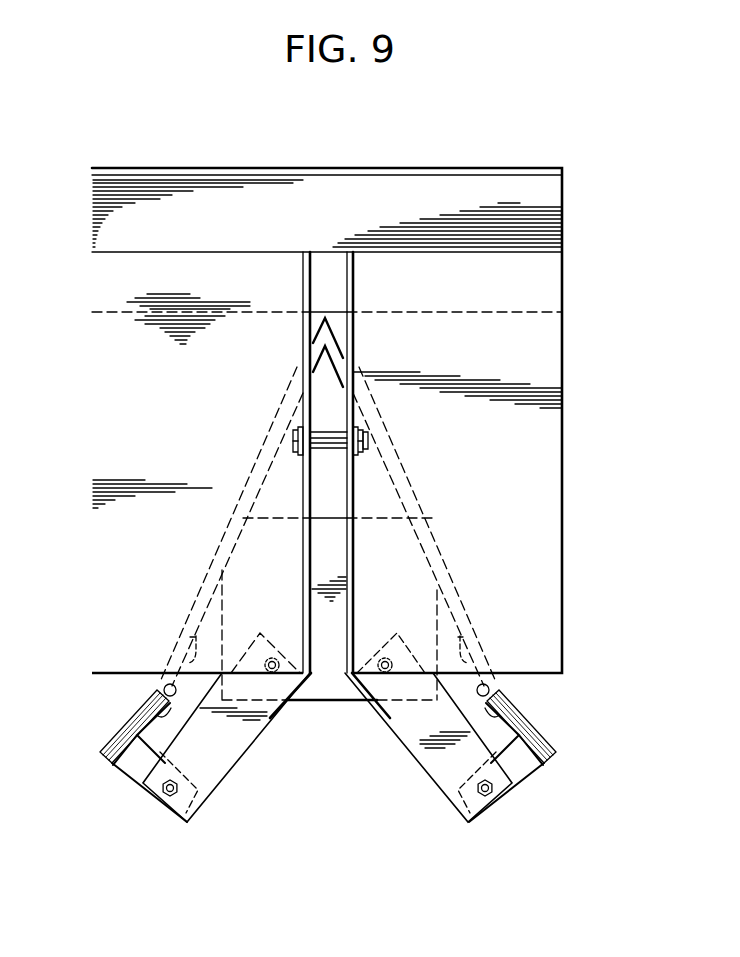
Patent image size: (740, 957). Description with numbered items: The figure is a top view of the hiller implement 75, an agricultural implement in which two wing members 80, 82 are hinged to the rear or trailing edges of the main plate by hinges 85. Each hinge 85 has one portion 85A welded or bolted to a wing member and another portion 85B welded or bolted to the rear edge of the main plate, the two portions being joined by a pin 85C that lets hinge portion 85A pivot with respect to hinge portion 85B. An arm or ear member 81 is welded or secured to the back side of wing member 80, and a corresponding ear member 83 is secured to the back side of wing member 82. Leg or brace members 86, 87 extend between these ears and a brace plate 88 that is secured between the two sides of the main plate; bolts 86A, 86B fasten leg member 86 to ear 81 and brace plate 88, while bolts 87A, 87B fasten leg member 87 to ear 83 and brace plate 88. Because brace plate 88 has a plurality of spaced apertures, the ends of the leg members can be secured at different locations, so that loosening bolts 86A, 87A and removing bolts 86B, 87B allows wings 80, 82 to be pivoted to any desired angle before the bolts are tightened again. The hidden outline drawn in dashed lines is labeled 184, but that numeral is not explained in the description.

The hiller implement 75 is at (531, 134).
The mounting bracket (hidden outline) 184 is at (425, 527).
The brace plate 88 is at (333, 693).
The leg member 86 is at (253, 727).
The leg member 87 is at (448, 775).
The bolt 86B is at (274, 656).
The bolt 87B is at (383, 656).
The hinge 85 is at (466, 707).
The hinge portion 85A is at (158, 718).
The hinge portion 85B is at (187, 638).
The pin 85C is at (164, 688).
The wing member 80 is at (122, 725).
The ear member 81 is at (123, 770).
The wing member 82 is at (548, 740).
The ear member 83 is at (527, 770).
The bolt 86A is at (163, 800).
The bolt 87A is at (492, 793).